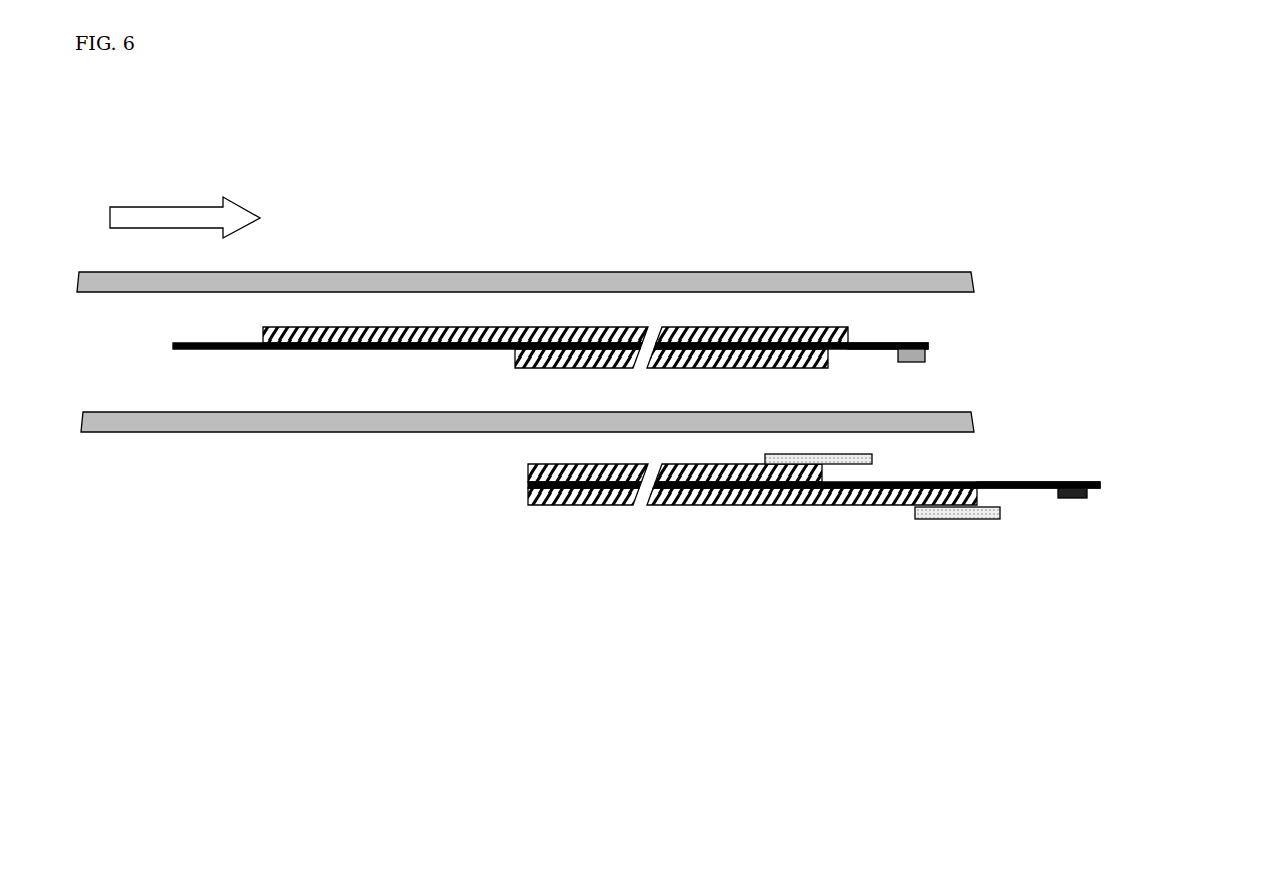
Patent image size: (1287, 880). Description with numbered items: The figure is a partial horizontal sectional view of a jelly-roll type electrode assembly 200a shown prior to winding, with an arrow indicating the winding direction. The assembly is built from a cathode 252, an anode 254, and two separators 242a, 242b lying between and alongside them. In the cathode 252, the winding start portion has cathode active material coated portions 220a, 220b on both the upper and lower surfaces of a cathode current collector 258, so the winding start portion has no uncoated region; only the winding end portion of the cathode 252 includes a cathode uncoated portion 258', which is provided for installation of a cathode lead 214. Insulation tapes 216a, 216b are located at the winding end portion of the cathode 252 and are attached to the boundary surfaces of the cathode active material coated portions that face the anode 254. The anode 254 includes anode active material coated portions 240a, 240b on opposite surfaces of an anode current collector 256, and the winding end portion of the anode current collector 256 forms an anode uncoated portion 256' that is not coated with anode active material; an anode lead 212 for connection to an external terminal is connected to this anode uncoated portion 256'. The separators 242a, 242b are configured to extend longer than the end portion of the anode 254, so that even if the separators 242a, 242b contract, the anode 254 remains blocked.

The jelly-roll type electrode assembly 200a is at (185, 150).
The separator 242a is at (346, 283).
The separator 242b is at (274, 432).
The anode 254 is at (813, 311).
The anode active material coated portion 240a is at (455, 327).
The anode active material coated portion 240b is at (574, 350).
The anode current collector 256 is at (888, 377).
The anode uncoated portion 256' is at (888, 313).
The anode lead 212 is at (927, 359).
The cathode 252 is at (707, 535).
The cathode active material coated portion 220a is at (767, 482).
The cathode active material coated portion 220b is at (562, 505).
The insulation tape 216a is at (842, 464).
The insulation tape 216b is at (960, 519).
The cathode current collector 258 is at (1038, 534).
The cathode uncoated portion 258' is at (1037, 447).
The cathode lead 214 is at (1088, 494).